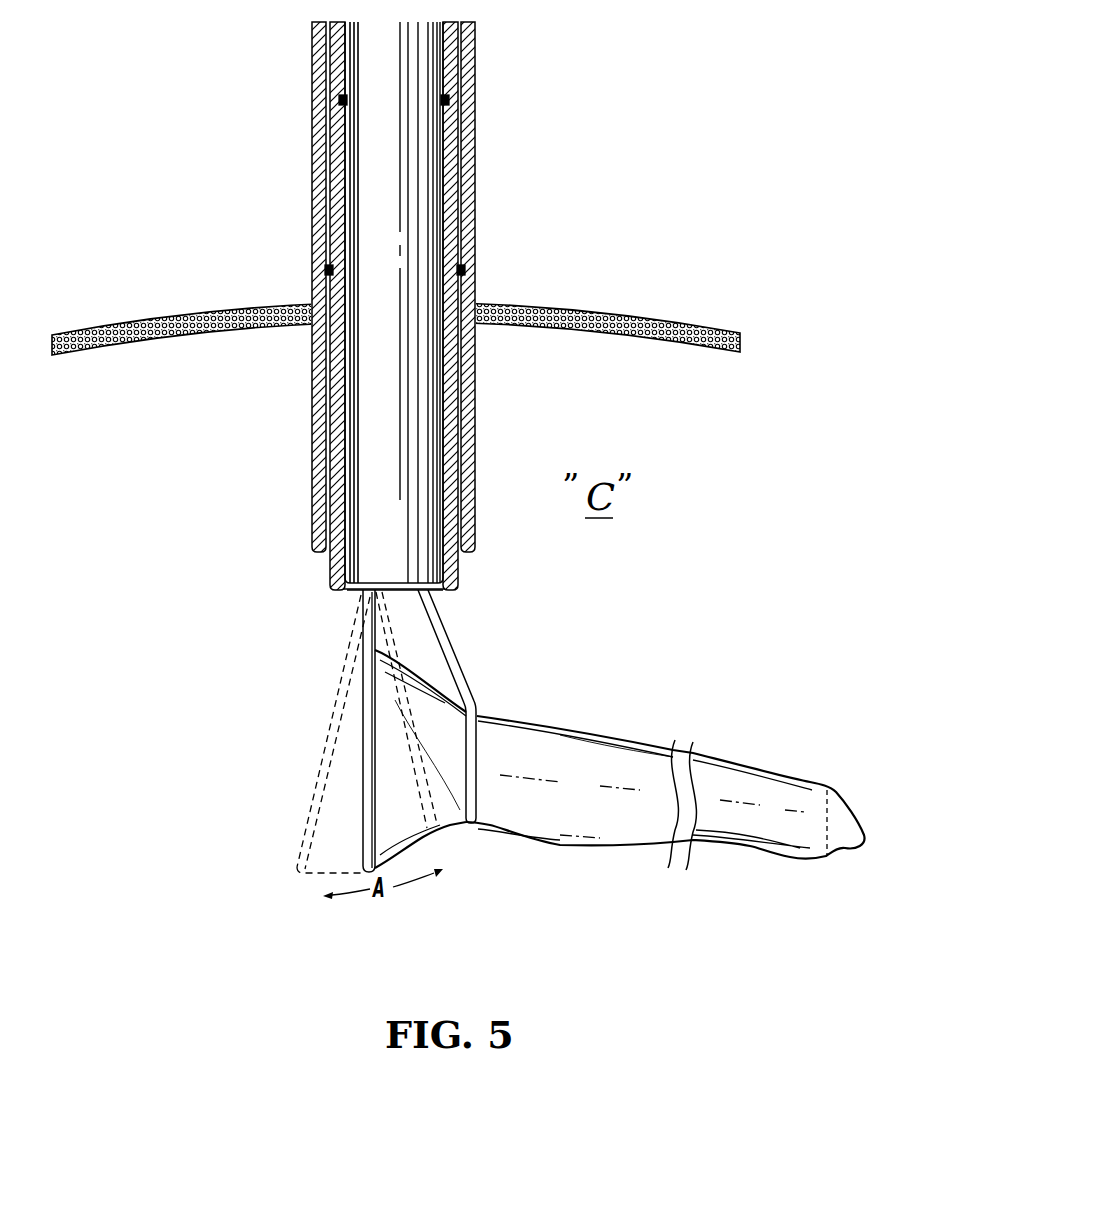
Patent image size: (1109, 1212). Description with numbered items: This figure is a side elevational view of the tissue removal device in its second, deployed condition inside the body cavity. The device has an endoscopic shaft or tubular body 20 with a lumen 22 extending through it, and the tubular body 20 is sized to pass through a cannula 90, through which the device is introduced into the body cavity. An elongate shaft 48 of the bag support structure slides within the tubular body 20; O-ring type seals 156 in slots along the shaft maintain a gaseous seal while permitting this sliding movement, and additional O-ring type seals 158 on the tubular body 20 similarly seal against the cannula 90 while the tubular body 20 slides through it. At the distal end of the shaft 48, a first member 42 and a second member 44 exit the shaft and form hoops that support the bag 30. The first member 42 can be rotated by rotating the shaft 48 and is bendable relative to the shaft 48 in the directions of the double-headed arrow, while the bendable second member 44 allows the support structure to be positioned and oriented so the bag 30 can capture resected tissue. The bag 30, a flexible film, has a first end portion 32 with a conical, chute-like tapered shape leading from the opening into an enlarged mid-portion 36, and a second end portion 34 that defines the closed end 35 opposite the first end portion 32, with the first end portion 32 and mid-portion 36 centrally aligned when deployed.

The cannula 90 is at (476, 63).
The tubular body 20 is at (460, 573).
The lumen 22 is at (455, 608).
The elongate shaft 48 is at (395, 239).
The O-ring type seals 156 is at (340, 100).
The O-ring type seals 158 is at (328, 270).
The second member 44 is at (368, 710).
The first member 42 is at (470, 703).
The bag 30 is at (530, 843).
The mid-portion 36 is at (645, 755).
The closed end 35 is at (828, 792).
The second end portion 34 is at (845, 822).
The first end portion 32 is at (385, 793).